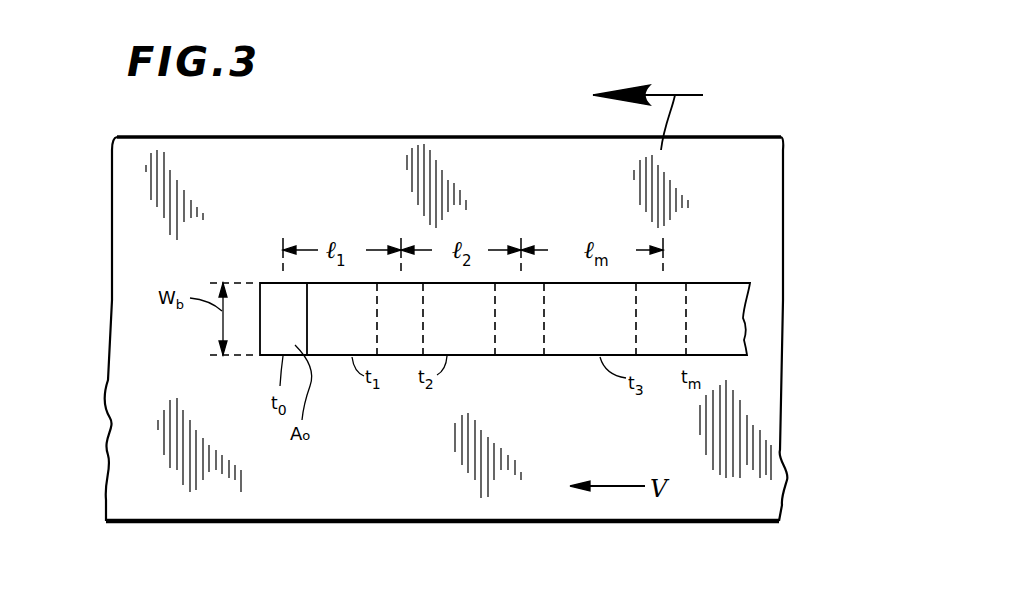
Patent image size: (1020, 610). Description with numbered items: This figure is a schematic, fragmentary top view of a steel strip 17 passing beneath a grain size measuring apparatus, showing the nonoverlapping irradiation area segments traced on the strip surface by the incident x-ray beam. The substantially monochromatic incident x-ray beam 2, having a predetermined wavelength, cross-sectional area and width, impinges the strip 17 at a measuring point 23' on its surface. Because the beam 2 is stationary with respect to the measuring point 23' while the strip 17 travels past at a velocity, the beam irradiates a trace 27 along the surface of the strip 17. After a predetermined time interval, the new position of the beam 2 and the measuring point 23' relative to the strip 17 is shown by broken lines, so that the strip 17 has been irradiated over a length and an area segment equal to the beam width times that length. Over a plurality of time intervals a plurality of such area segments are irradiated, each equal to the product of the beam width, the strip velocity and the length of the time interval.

The incident x-ray beam 2 is at (260, 355).
The steel strip 17 is at (557, 522).
The measuring point 23' is at (454, 336).
The trace 27 is at (714, 283).